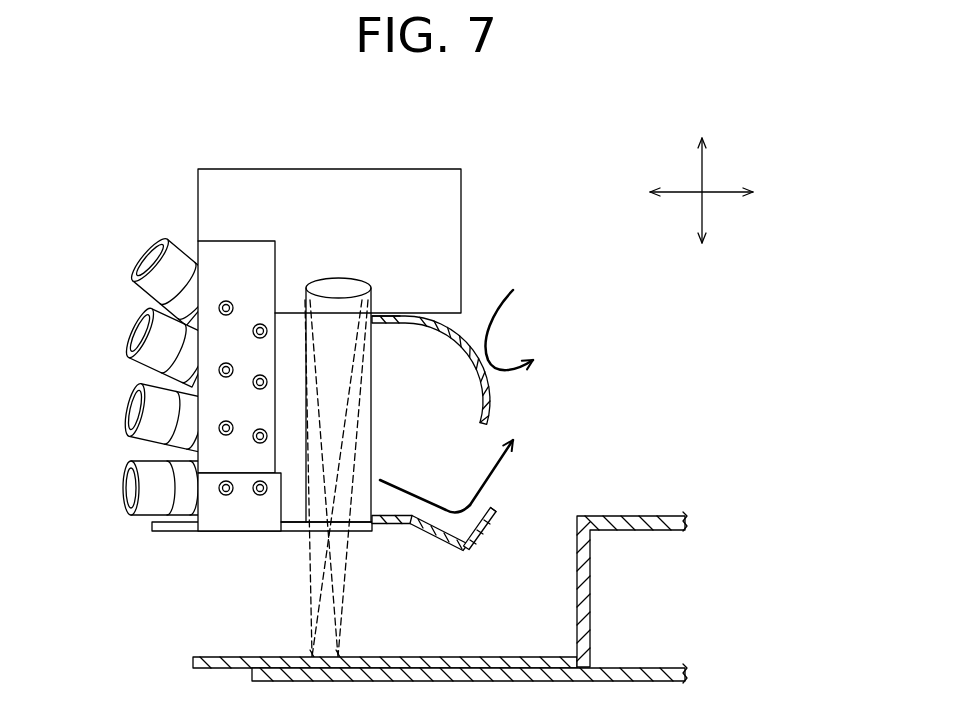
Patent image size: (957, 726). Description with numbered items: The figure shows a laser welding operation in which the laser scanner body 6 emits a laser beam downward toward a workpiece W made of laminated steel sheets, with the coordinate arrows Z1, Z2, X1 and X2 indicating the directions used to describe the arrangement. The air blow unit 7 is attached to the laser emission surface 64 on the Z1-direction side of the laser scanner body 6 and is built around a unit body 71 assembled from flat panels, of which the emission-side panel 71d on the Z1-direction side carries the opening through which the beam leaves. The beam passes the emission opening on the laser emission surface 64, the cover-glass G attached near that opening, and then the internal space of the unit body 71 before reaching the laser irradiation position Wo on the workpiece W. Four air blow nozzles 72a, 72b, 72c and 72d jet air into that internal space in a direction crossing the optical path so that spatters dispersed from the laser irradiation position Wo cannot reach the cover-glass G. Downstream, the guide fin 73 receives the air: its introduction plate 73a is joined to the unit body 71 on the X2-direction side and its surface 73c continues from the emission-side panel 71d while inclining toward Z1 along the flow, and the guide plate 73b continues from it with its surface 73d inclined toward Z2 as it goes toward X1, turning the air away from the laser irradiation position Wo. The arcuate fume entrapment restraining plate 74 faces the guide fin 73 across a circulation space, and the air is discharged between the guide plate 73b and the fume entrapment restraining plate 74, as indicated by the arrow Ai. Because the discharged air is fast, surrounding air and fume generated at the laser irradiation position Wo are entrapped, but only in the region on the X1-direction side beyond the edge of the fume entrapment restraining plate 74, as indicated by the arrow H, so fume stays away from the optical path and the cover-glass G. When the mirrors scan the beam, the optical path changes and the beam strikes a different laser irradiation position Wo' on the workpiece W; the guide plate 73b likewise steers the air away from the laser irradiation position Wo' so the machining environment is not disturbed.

The laser scanner body 6 is at (430, 168).
The air blow unit 7 is at (163, 533).
The unit body 71 is at (255, 533).
The emission-side panel 71d is at (296, 533).
The air blow nozzle 72a is at (128, 487).
The air blow nozzle 72b is at (133, 410).
The air blow nozzle 72c is at (138, 331).
The air blow nozzle 72d is at (148, 256).
The guide fin 73 is at (467, 546).
The introduction plate 73a is at (423, 533).
The guide plate 73b is at (480, 535).
The surface of the introduction plate 73c is at (436, 517).
The surface of the guide plate 73d is at (482, 502).
The fume entrapment restraining plate 74 is at (490, 380).
The laser emission surface 64 is at (465, 338).
The cover-glass G is at (355, 285).
The arrow indicative of the entrapment of the fume H is at (500, 322).
The arrow indicative of the flow of the air Ai is at (500, 474).
The workpiece W is at (435, 655).
The laser irradiation position Wo is at (374, 633).
The laser irradiation position Wo' is at (272, 633).
The Z1 direction Z1 is at (702, 257).
The Z2 direction Z2 is at (702, 173).
The X1 direction X1 is at (766, 193).
The X2 direction X2 is at (683, 193).